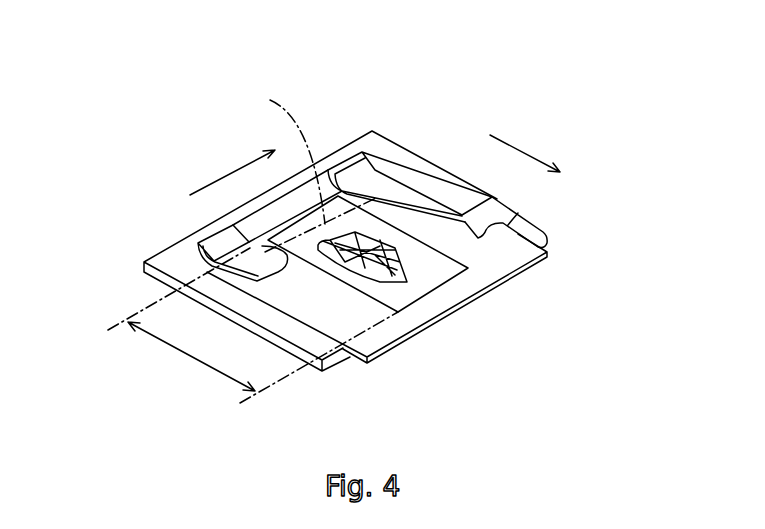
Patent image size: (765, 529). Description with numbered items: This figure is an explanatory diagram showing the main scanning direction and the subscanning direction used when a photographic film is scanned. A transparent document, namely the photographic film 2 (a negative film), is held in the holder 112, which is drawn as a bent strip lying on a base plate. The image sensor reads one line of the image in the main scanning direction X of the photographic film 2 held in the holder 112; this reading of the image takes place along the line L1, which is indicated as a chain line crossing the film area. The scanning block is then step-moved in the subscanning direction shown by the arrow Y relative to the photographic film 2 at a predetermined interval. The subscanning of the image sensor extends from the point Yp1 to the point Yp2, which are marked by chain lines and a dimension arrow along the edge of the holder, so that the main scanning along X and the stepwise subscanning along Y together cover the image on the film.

The photographic film 2 is at (455, 314).
The holder 112 is at (395, 139).
The line L1 is at (311, 172).
The point Yp1 is at (166, 319).
The point Yp2 is at (319, 369).
The main scanning direction X is at (232, 172).
The subscanning direction Y is at (525, 153).